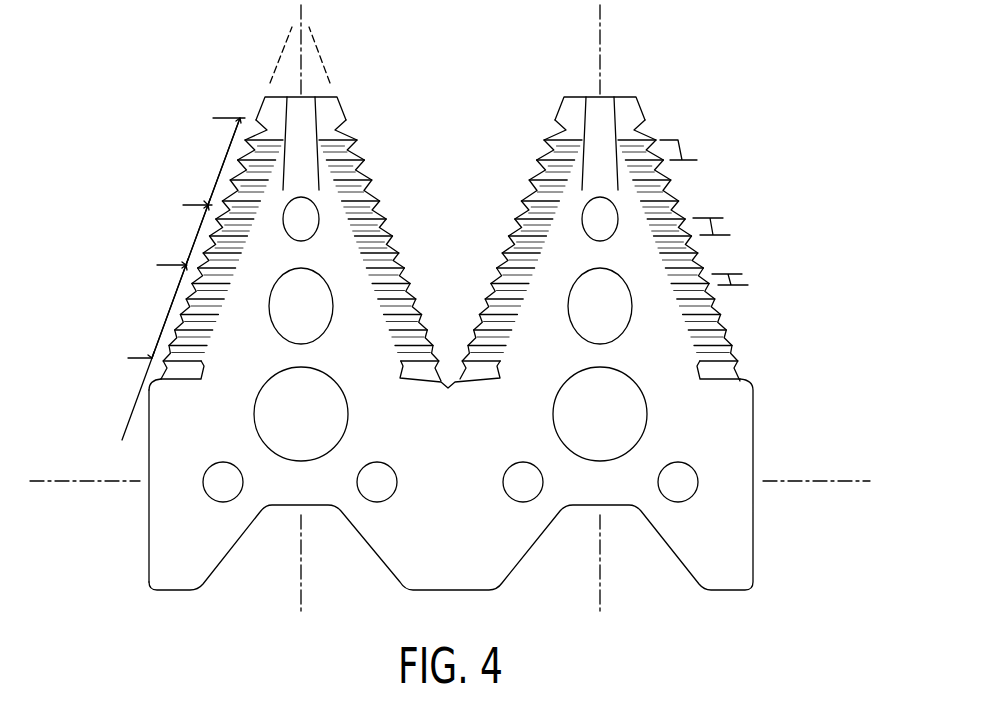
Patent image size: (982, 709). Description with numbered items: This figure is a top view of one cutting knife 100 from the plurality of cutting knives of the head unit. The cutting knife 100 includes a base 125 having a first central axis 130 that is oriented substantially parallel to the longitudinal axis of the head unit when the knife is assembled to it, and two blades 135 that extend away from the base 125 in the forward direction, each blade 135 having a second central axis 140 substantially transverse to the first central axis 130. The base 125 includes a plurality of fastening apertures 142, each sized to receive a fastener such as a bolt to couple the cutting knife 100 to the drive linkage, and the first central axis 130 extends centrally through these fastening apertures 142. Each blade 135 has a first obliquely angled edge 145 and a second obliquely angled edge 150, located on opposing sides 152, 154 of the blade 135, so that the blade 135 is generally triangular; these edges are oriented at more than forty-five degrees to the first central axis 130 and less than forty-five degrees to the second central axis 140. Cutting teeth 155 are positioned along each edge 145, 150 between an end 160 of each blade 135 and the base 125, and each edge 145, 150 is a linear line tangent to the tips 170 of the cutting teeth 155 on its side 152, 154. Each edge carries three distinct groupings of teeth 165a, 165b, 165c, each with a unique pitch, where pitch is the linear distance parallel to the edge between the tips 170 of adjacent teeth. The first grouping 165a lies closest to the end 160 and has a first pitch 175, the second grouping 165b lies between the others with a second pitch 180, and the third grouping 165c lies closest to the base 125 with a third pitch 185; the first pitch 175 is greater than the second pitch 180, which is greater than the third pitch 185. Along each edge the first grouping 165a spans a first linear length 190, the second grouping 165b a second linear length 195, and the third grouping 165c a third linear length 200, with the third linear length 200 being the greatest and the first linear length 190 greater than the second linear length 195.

The cutting knife 100 is at (835, 44).
The base 125 is at (716, 592).
The first central axis 130 is at (818, 478).
The blade 135 is at (307, 137).
The second central axis 140 is at (300, 612).
The fastening aperture 142 is at (205, 490).
The first obliquely angled edge 145 is at (148, 412).
The second obliquely angled edge 150 is at (471, 438).
The first side of the blade 152 is at (143, 134).
The second side of the blade 154 is at (407, 134).
The cutting teeth 155 is at (417, 222).
The end of the blade 160 is at (272, 97).
The first grouping of teeth 165a is at (168, 153).
The second grouping of teeth 165b is at (138, 236).
The third grouping of teeth 165c is at (108, 315).
The tips of the cutting teeth 170 is at (547, 142).
The first pitch 175 is at (681, 150).
The second pitch 180 is at (713, 227).
The third pitch 185 is at (736, 280).
The first linear length 190 is at (216, 137).
The second linear length 195 is at (190, 222).
The third linear length 200 is at (165, 292).